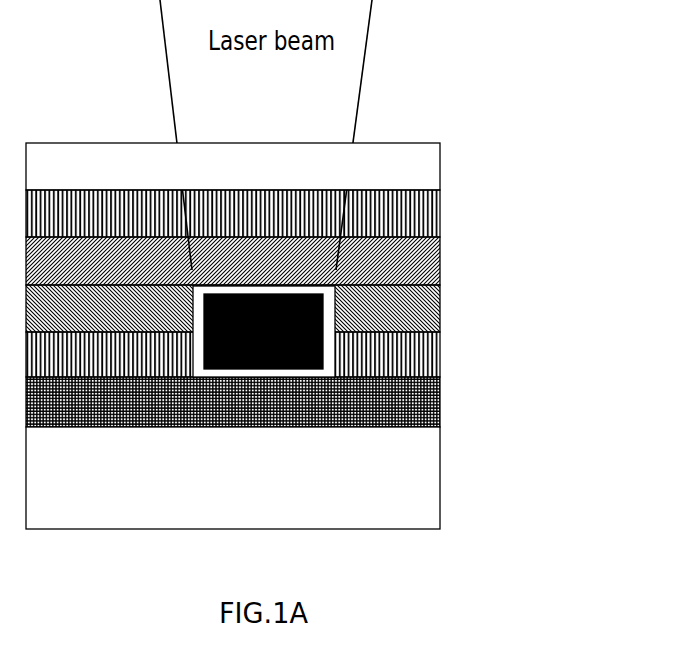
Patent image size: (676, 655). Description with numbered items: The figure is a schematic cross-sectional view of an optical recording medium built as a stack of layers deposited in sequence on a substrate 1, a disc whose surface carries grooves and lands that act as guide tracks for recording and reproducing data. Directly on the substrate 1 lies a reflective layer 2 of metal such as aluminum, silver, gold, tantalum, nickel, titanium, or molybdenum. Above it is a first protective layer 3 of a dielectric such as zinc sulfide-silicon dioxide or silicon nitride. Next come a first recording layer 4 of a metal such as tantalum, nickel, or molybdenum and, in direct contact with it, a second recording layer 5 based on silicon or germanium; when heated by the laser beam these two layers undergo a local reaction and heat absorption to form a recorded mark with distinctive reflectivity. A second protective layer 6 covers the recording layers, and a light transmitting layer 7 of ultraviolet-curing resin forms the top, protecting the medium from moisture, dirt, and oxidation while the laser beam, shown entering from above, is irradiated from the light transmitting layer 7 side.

The substrate 1 is at (459, 486).
The reflective layer 2 is at (459, 396).
The first protective layer 3 is at (459, 361).
The first recording layer 4 is at (459, 304).
The second recording layer 5 is at (459, 252).
The second protective layer 6 is at (459, 214).
The light transmitting layer 7 is at (459, 160).